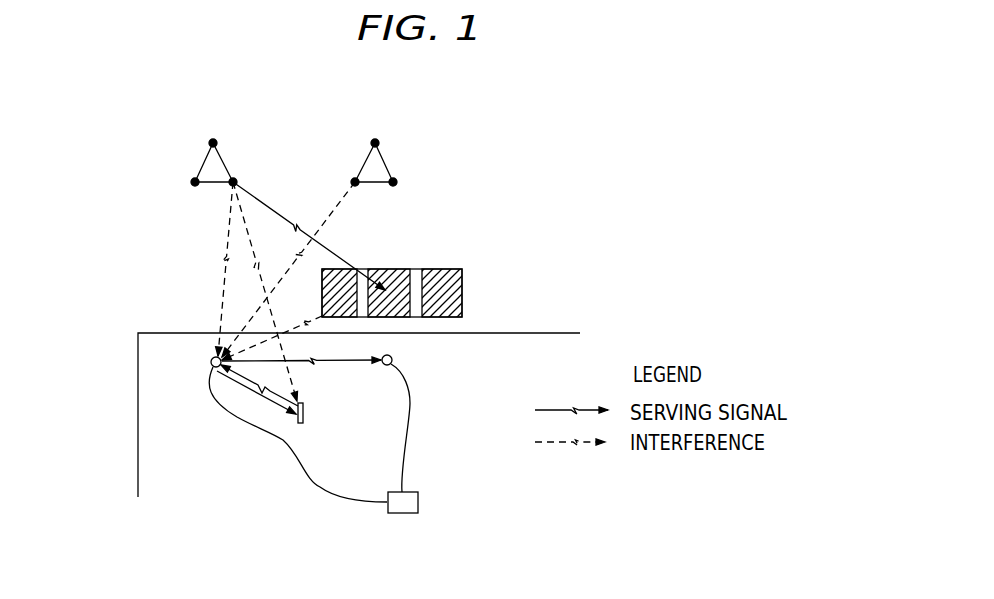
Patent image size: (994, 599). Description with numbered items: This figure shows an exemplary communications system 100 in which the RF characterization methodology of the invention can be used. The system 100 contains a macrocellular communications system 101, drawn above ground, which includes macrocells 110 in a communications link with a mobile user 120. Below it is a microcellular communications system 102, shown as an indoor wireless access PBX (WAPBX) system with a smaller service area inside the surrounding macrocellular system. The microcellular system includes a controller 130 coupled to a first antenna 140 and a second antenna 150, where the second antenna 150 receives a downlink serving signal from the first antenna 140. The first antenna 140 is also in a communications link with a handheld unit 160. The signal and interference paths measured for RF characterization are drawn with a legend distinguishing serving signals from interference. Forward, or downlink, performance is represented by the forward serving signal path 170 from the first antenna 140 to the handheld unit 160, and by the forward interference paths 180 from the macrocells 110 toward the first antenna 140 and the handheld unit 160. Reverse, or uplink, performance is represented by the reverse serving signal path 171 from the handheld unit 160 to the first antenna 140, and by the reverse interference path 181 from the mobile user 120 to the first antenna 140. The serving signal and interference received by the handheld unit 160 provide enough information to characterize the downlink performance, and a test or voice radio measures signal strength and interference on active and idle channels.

The system 100 is at (462, 138).
The macrocellular communications system 101 is at (146, 280).
The microcellular communications system 102 is at (258, 519).
The macrocells 110 is at (205, 160).
The mobile user 120 is at (437, 269).
The controller 130 is at (418, 500).
The first antenna 140 is at (211, 361).
The second antenna 150 is at (393, 358).
The handheld unit 160 is at (303, 412).
The forward serving signal path 170 is at (248, 395).
The reverse serving signal path 171 is at (262, 402).
The forward interference paths 180 is at (221, 248).
The reverse interference path 181 is at (318, 315).